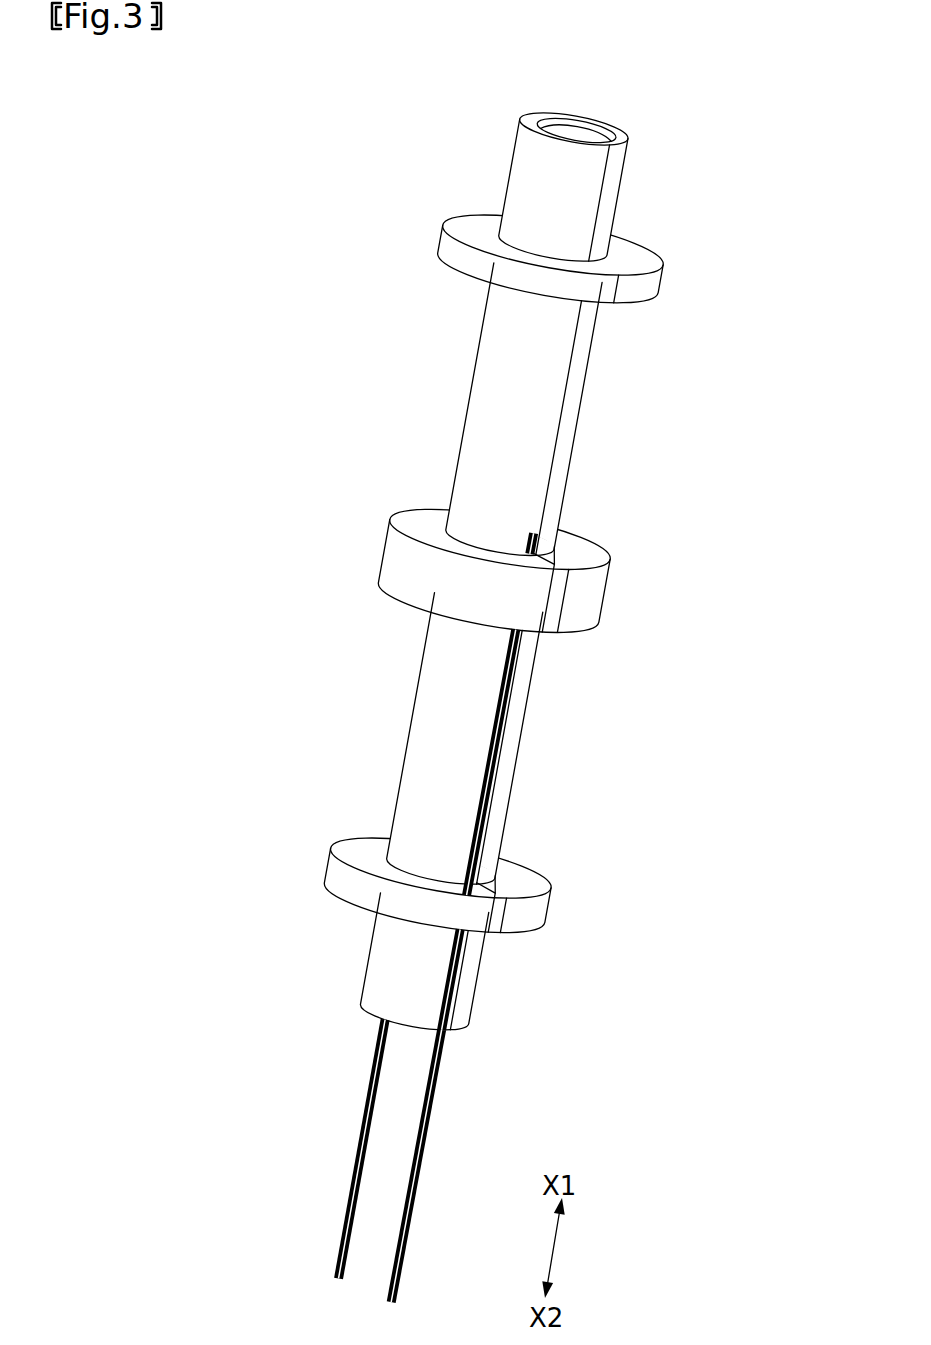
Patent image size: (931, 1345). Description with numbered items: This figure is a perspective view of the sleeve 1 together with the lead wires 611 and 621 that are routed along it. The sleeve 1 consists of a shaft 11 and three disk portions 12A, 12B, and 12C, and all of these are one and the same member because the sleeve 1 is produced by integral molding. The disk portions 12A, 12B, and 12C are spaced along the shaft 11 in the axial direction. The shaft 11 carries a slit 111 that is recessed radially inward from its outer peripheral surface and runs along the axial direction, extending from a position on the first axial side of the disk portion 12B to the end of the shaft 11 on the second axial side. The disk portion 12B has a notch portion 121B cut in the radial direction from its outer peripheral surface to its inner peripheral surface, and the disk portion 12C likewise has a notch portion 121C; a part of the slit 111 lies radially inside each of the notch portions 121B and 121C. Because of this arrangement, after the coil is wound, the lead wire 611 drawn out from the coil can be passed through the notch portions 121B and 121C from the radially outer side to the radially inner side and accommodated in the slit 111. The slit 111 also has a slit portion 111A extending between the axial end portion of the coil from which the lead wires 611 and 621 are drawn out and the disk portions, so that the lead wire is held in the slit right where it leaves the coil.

The sleeve 1 is at (492, 89).
The shaft 11 is at (613, 174).
The disk portion 12A is at (650, 257).
The disk portion 12B is at (597, 553).
The disk portion 12C is at (548, 888).
The notch portion 121B is at (563, 573).
The notch portion 121C is at (505, 903).
The slit 111 is at (453, 1007).
The slit portion 111A is at (545, 548).
The lead wire 611 is at (405, 1268).
The lead wire 621 is at (340, 1238).